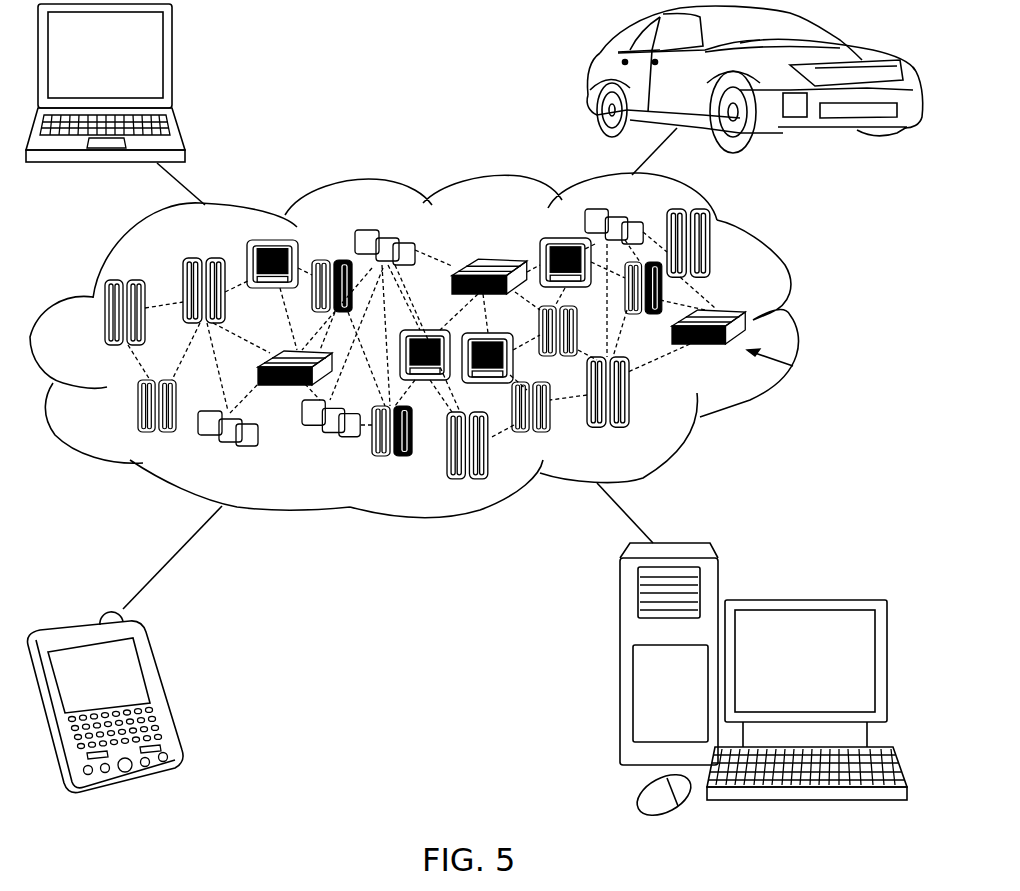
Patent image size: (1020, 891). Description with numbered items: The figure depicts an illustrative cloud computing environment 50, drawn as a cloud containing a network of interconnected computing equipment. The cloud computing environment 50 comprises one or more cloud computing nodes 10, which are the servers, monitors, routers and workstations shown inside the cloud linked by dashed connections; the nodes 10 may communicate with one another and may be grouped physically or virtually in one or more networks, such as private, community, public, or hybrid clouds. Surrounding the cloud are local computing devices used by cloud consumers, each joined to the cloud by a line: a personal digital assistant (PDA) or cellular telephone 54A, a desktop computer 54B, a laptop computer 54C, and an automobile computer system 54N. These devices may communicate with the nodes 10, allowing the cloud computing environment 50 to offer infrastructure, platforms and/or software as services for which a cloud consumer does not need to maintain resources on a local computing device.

The cloud computing node 10 is at (793, 366).
The cloud computing environment 50 is at (805, 322).
The personal digital assistant (PDA) or cellular telephone 54A is at (160, 693).
The desktop computer 54B is at (800, 598).
The laptop computer 54C is at (178, 62).
The automobile computer system 54N is at (590, 78).